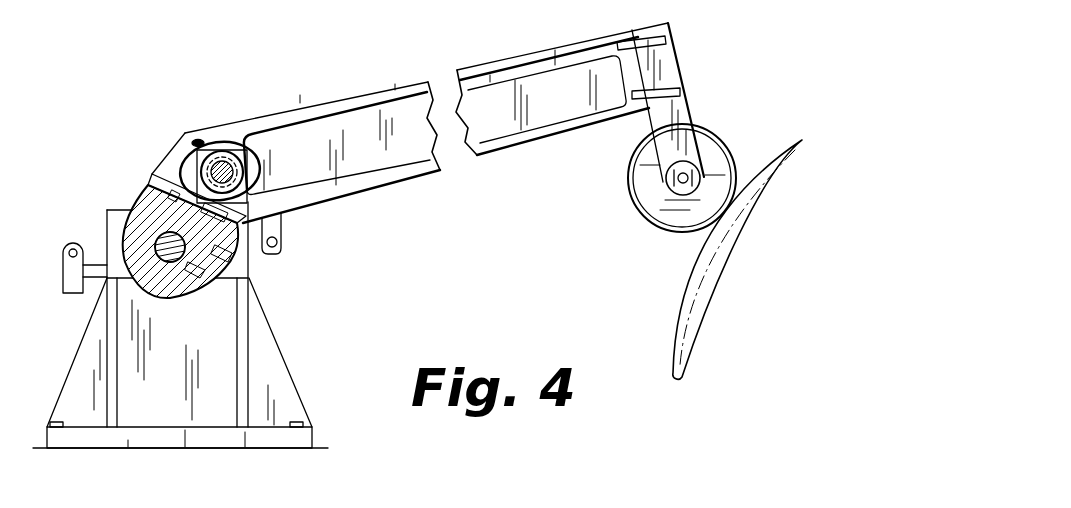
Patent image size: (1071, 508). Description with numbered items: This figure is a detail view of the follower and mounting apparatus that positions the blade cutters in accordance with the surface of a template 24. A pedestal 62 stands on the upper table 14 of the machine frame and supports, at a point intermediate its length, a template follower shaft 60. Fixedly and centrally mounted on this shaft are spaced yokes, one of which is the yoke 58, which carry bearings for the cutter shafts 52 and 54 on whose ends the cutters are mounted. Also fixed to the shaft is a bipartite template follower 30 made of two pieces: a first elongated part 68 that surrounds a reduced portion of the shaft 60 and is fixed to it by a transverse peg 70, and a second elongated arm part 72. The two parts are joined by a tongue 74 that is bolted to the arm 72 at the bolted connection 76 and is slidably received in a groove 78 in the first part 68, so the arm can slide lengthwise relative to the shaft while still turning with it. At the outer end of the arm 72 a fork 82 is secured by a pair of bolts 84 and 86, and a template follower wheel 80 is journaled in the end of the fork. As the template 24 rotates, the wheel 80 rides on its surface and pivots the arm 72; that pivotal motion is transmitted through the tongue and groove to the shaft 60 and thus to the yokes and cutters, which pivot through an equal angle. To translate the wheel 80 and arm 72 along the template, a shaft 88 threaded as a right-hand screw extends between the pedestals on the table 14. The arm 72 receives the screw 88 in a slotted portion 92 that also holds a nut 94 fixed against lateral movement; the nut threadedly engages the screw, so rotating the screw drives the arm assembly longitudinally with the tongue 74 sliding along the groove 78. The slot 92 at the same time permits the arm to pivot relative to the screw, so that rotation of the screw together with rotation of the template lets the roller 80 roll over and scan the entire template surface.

The upper table 14 is at (323, 448).
The template 24 is at (703, 315).
The template follower 30 is at (394, 188).
The shaft 52 is at (278, 247).
The shaft 54 is at (70, 256).
The yoke 58 is at (97, 263).
The template follower shaft 60 is at (170, 263).
The pedestal 62 is at (262, 332).
The first elongated part 68 is at (228, 252).
The transverse peg 70 is at (198, 290).
The second elongated arm part 72 is at (338, 192).
The tongue 74 is at (186, 198).
The bolted connection 76 is at (215, 219).
The groove 78 is at (176, 203).
The template follower wheel 80 is at (664, 210).
The fork 82 is at (672, 74).
The bolt 84 is at (675, 43).
The bolt 86 is at (681, 96).
The shaft (screw) 88 is at (232, 178).
The slotted portion 92 is at (199, 140).
The nut 94 is at (236, 156).